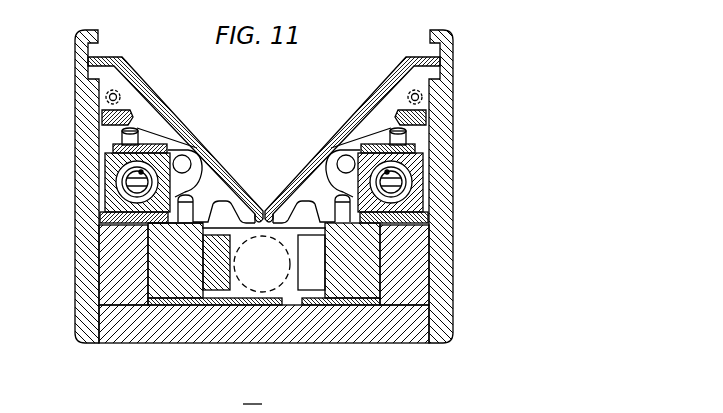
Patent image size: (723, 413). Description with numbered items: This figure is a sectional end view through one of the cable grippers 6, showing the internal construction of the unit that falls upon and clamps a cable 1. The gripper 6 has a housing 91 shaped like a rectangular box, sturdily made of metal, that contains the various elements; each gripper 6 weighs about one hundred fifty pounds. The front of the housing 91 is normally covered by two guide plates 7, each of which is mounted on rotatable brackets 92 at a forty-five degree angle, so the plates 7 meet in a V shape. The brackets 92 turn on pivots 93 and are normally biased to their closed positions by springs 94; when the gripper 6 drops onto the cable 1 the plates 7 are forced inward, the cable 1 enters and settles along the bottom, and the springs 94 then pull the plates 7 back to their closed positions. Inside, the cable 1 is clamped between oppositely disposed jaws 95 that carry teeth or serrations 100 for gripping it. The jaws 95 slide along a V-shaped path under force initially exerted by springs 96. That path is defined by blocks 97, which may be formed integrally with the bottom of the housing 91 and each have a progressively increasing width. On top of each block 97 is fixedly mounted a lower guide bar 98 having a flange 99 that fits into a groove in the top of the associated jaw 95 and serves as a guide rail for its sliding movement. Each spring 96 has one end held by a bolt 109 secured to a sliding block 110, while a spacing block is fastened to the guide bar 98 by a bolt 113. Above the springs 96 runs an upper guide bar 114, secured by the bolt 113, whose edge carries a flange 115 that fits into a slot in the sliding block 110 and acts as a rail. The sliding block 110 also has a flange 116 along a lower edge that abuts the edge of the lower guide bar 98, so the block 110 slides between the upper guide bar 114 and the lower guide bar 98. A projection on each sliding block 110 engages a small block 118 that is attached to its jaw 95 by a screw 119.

The cable 1 is at (250, 285).
The cable gripper 6 is at (252, 396).
The guide plate 7 is at (138, 75).
The housing 91 is at (82, 146).
The rotatable bracket 92 is at (146, 115).
The pivot 93 is at (186, 163).
The spring 94 is at (130, 113).
The jaw 95 is at (375, 288).
The spring 96 is at (104, 178).
The block 97 is at (106, 264).
The guide bar 98 is at (108, 238).
The flange 99 is at (108, 247).
The teeth or serrations 100 is at (300, 285).
The bolt 109 is at (423, 175).
The sliding block 110 is at (428, 214).
The bolt 113 is at (406, 135).
The guide bar 114 is at (418, 150).
The flange 115 is at (103, 164).
The flange 116 is at (268, 212).
The small block 118 is at (200, 220).
The screw 119 is at (193, 205).